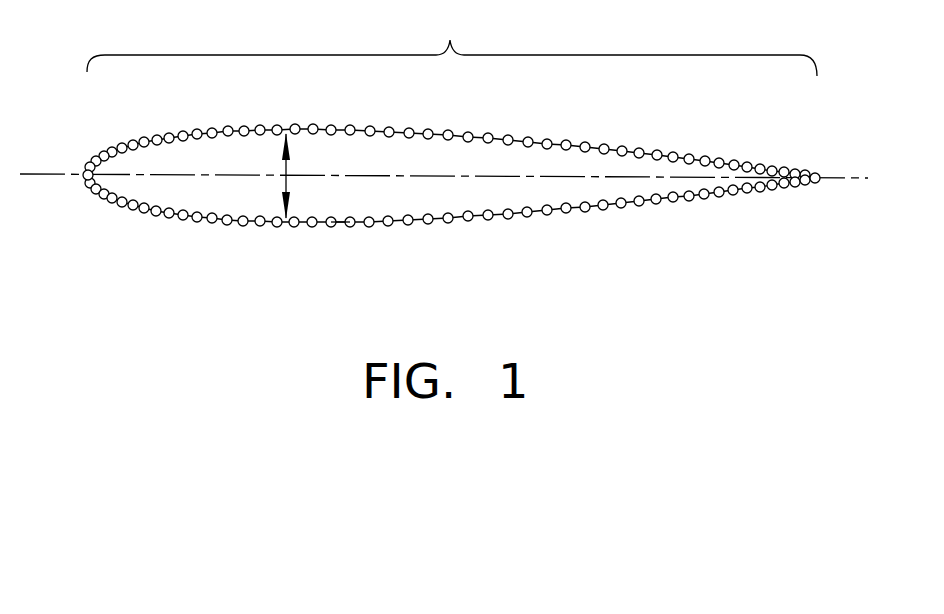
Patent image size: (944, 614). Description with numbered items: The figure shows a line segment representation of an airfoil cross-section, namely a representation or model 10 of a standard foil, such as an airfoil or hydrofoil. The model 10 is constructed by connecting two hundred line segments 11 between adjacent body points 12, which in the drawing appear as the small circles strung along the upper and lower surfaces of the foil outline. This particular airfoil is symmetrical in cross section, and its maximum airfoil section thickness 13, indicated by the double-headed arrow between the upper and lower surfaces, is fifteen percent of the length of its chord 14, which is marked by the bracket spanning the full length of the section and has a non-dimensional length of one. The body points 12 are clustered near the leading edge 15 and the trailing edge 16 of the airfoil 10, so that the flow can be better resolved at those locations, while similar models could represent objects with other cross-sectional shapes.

The model of a standard foil 10 is at (437, 237).
The line segments 11 is at (295, 228).
The body points 12 is at (339, 228).
The maximum airfoil section thickness 13 is at (286, 176).
The chord 14 is at (452, 45).
The leading edge 15 is at (86, 178).
The trailing edge 16 is at (816, 178).